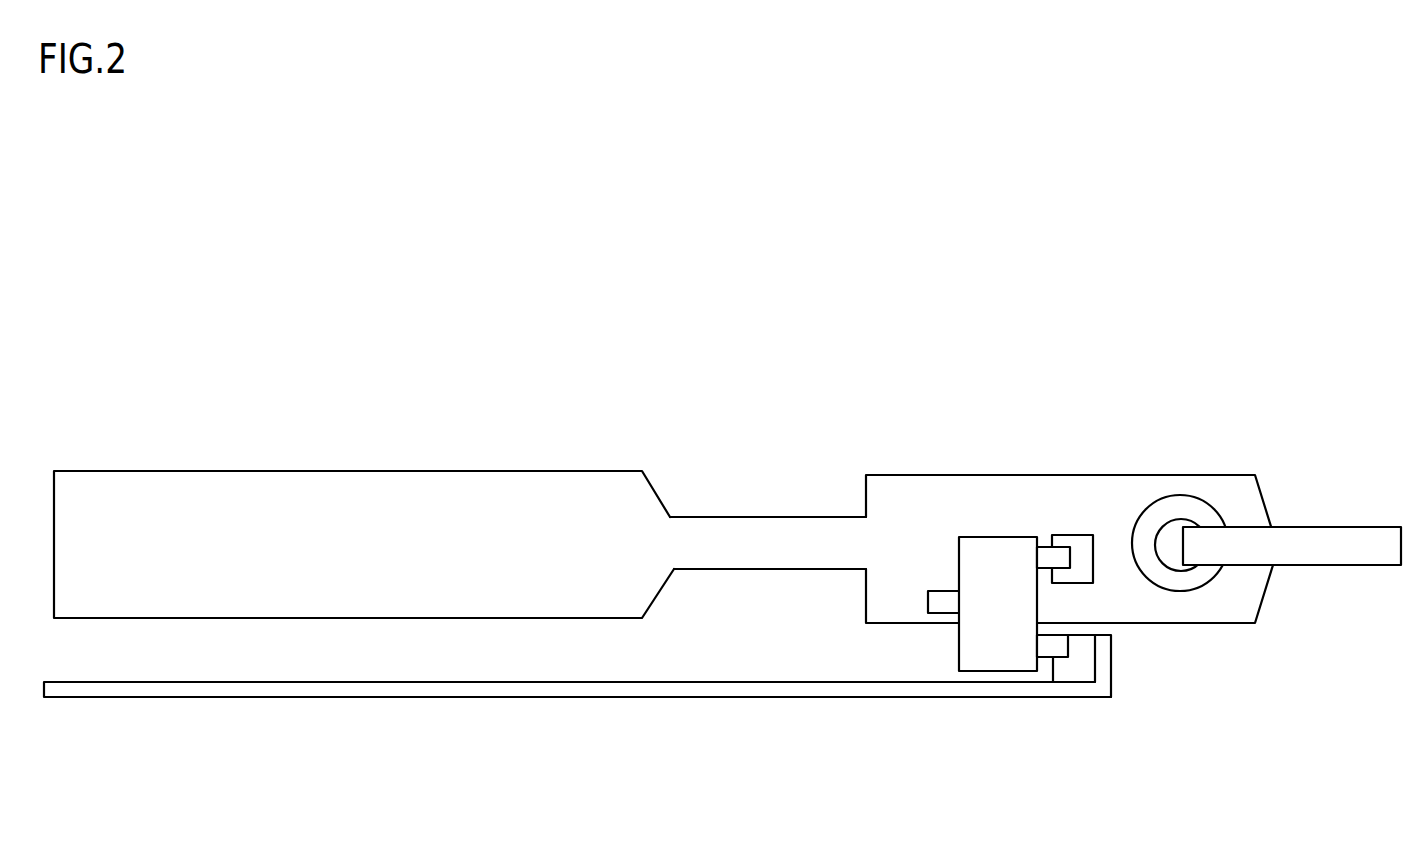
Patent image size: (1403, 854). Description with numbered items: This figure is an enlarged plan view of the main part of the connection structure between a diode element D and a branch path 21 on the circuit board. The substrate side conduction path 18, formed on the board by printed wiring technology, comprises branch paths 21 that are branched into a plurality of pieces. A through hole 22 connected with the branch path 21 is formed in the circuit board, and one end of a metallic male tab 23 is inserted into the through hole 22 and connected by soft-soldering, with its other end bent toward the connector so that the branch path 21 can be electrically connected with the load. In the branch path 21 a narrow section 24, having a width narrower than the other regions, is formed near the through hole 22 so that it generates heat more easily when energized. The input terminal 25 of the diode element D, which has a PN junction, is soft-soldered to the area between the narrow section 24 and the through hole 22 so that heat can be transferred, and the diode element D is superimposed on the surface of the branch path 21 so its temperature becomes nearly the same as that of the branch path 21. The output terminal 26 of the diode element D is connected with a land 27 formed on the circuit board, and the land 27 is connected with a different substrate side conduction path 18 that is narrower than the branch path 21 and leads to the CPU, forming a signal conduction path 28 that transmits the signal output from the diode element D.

The substrate side conduction path 18 is at (203, 482).
The branch path 21 is at (327, 490).
The through hole 22 is at (1167, 532).
The male tab 23 is at (1340, 553).
The narrow section 24 is at (777, 537).
The input terminal 25 is at (1052, 558).
The output terminal 26 is at (1048, 657).
The land 27 is at (1085, 665).
The signal conduction path 28 is at (362, 690).
The diode element D is at (993, 650).